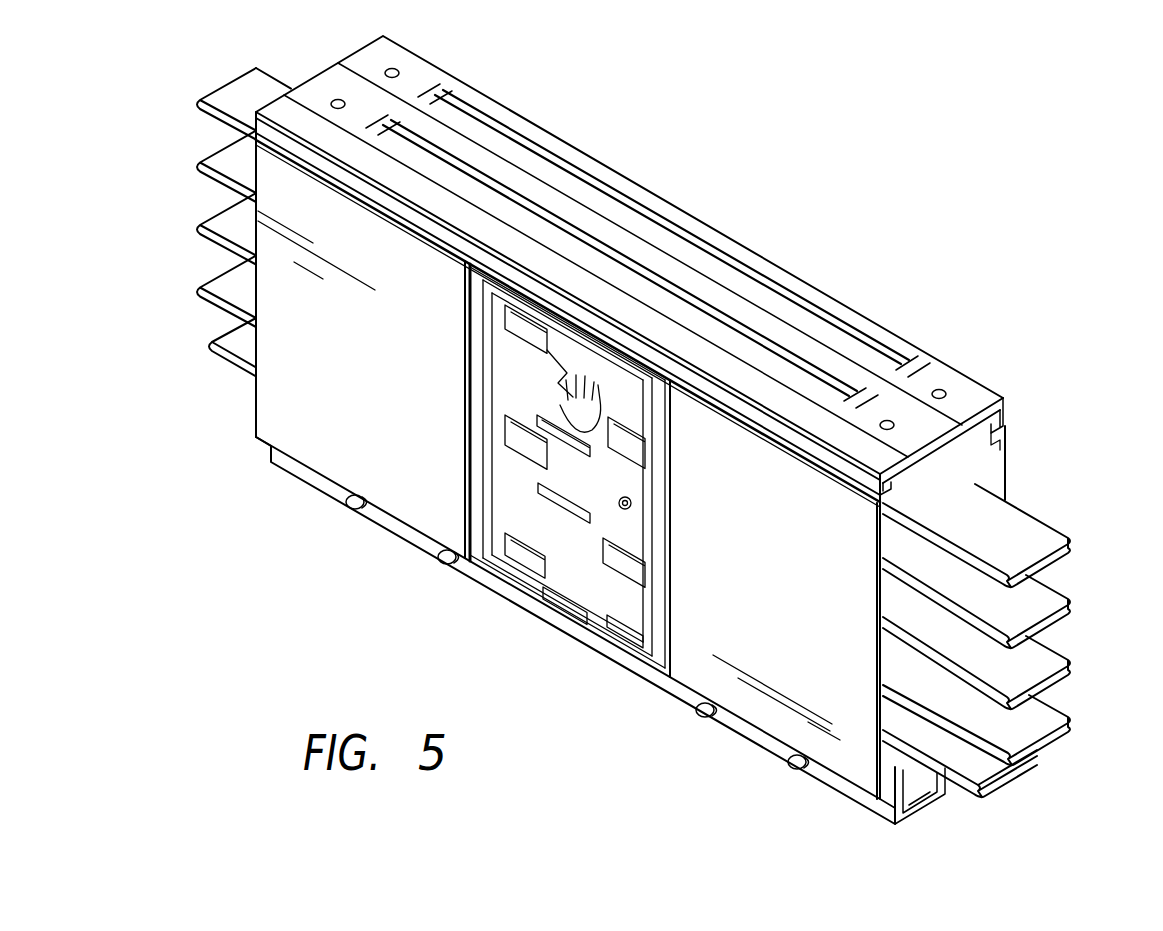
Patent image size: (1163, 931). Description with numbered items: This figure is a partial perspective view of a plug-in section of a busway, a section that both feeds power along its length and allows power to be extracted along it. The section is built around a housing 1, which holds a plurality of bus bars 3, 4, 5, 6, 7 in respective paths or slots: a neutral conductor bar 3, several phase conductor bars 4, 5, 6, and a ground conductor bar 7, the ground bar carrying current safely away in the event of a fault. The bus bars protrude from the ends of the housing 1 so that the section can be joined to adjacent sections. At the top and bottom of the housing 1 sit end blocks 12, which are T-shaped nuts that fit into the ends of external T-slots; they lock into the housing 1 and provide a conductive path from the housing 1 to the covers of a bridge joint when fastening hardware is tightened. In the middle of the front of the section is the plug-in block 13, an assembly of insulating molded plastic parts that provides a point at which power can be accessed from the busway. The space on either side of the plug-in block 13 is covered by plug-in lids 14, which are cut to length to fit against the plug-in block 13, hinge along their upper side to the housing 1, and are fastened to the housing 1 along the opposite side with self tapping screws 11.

The housing 1 is at (732, 238).
The neutral conductor bar 3 is at (1070, 538).
The phase conductor bar 4 is at (1070, 600).
The phase conductor bar 5 is at (1070, 660).
The phase conductor bar 6 is at (1067, 727).
The ground conductor bar 7 is at (1013, 775).
The self tapping screw 11 is at (790, 760).
The end block 12 is at (972, 413).
The plug-in block 13 is at (558, 610).
The plug-in lid 14 is at (730, 722).